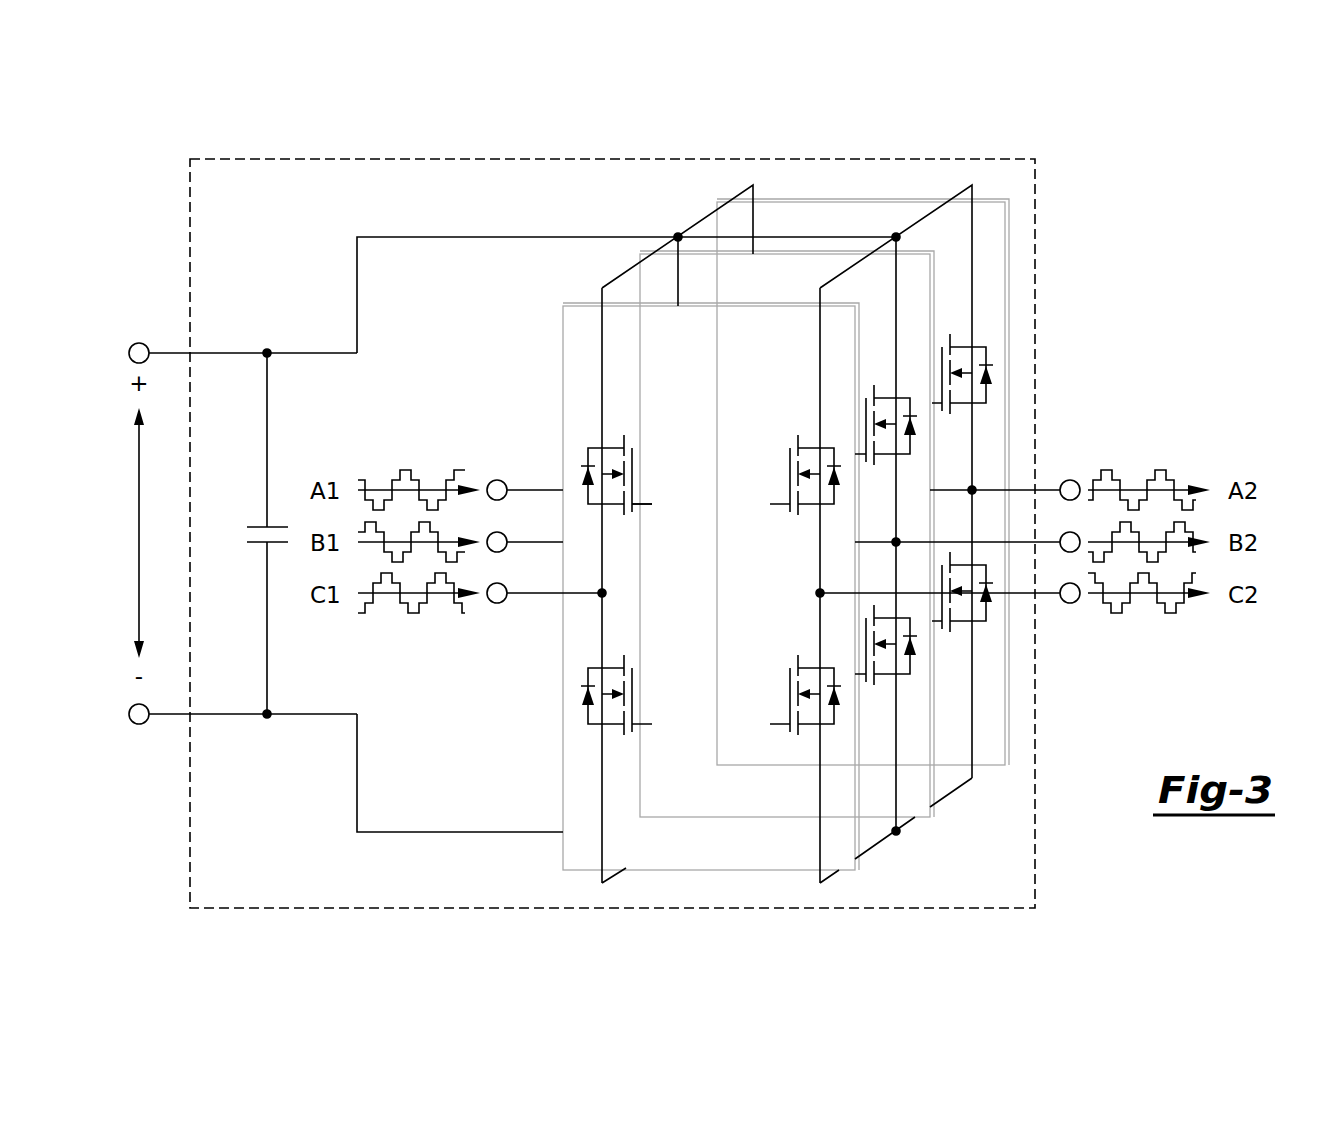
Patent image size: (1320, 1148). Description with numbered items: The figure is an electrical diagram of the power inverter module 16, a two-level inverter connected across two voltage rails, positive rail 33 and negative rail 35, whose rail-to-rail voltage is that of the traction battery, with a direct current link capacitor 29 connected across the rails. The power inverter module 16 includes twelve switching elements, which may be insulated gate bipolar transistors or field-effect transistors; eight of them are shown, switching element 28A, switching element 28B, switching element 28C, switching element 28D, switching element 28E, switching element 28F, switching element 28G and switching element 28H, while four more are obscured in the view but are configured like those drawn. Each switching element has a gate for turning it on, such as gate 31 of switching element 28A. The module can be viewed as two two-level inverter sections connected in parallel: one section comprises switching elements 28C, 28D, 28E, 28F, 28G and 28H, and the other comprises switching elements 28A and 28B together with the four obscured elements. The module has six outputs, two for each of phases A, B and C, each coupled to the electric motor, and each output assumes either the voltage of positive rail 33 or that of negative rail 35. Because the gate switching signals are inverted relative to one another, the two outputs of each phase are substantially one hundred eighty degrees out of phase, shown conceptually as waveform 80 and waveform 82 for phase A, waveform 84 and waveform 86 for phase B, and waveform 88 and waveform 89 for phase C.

The power inverter module 16 is at (323, 160).
The direct current (DC) link capacitor 29 is at (258, 527).
The gate 31 is at (648, 505).
The positive rail 33 is at (447, 237).
The negative rail 35 is at (447, 832).
The switching element 28A is at (612, 448).
The switching element 28B is at (612, 724).
The switching element 28C is at (807, 505).
The switching element 28D is at (807, 725).
The switching element 28E is at (888, 455).
The switching element 28F is at (888, 675).
The switching element 28G is at (965, 404).
The switching element 28H is at (965, 622).
The waveform 80 is at (405, 470).
The waveform 84 is at (421, 521).
The waveform 88 is at (412, 613).
The waveform 82 is at (1163, 468).
The waveform 86 is at (1120, 520).
The waveform 89 is at (1172, 613).